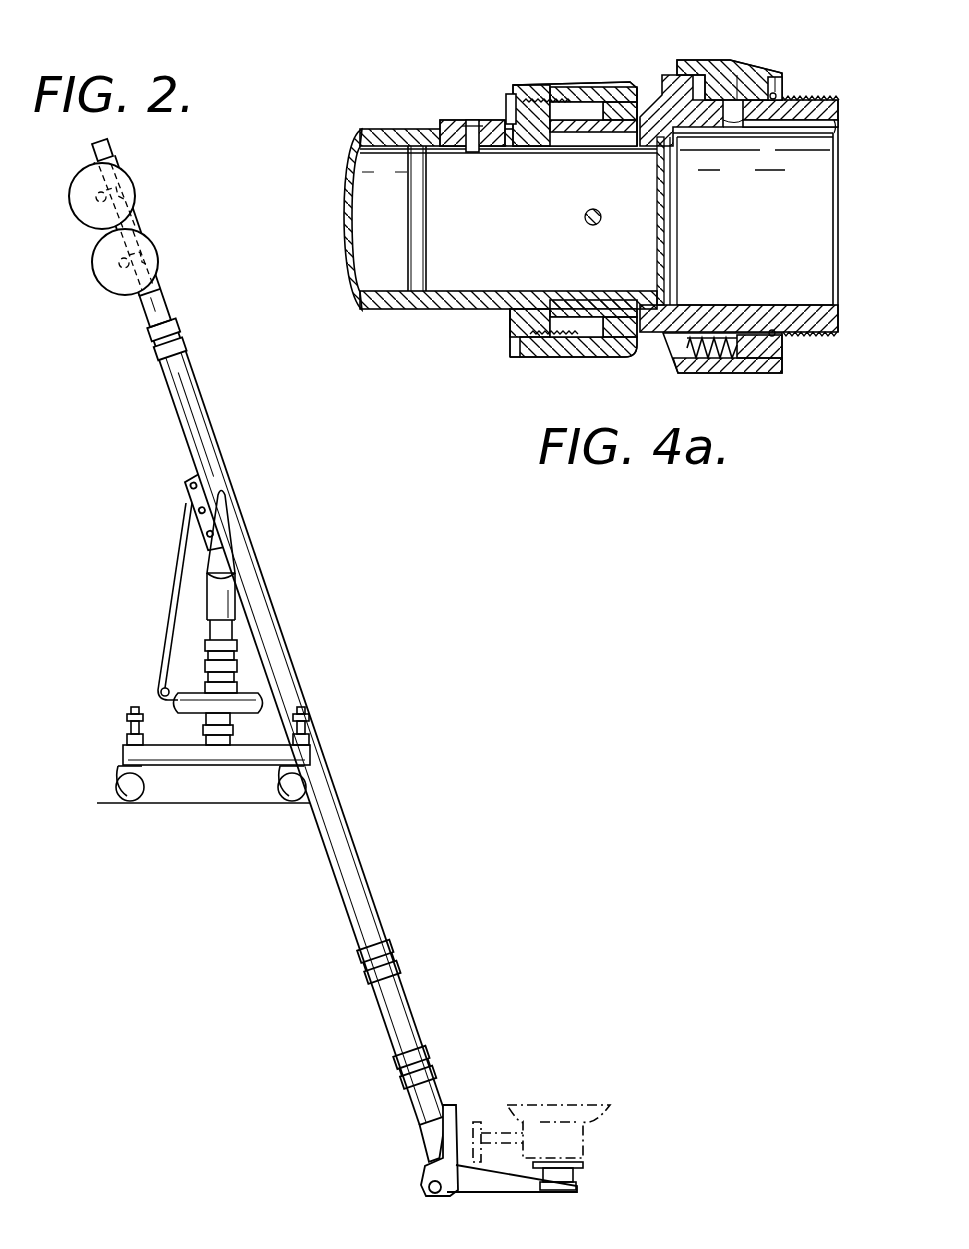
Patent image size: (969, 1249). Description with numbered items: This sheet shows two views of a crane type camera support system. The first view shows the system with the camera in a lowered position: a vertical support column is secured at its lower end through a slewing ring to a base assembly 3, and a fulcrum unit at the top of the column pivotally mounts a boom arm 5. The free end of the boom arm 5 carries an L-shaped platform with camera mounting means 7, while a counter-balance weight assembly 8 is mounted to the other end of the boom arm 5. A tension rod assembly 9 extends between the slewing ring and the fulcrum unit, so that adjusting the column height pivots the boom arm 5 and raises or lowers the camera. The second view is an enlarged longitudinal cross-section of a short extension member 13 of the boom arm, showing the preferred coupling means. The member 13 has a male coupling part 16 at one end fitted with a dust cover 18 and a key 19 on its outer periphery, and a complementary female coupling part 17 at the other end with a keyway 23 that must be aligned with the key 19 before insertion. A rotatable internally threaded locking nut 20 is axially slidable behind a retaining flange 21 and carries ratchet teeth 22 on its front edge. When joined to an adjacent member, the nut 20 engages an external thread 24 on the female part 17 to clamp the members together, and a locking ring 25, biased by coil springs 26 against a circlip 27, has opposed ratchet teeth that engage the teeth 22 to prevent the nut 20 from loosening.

In FIG. 2, the base assembly 3 is at (187, 753).
In FIG. 2, the boom arm 5 is at (297, 628).
In FIG. 2, the camera mounting means 7 is at (570, 1107).
In FIG. 2, the counter-balance weight assembly 8 is at (157, 257).
In FIG. 2, the tension rod assembly 9 is at (173, 603).
In FIG. 4A, the extension member 13 is at (648, 68).
In FIG. 4A, the male coupling part 16 is at (419, 310).
In FIG. 4A, the female coupling part 17 is at (787, 240).
In FIG. 4A, the dust cover 18 is at (346, 172).
In FIG. 4A, the key 19 is at (465, 120).
In FIG. 4A, the locking nut 20 is at (577, 82).
In FIG. 4A, the retaining flange 21 is at (517, 323).
In FIG. 4A, the ratchet teeth 22 is at (507, 94).
In FIG. 4A, the keyway 23 is at (837, 127).
In FIG. 4A, the external thread 24 is at (820, 335).
In FIG. 4A, the locking ring 25 is at (763, 36).
In FIG. 4A, the coil springs 26 is at (697, 372).
In FIG. 4A, the circlip 27 is at (783, 84).